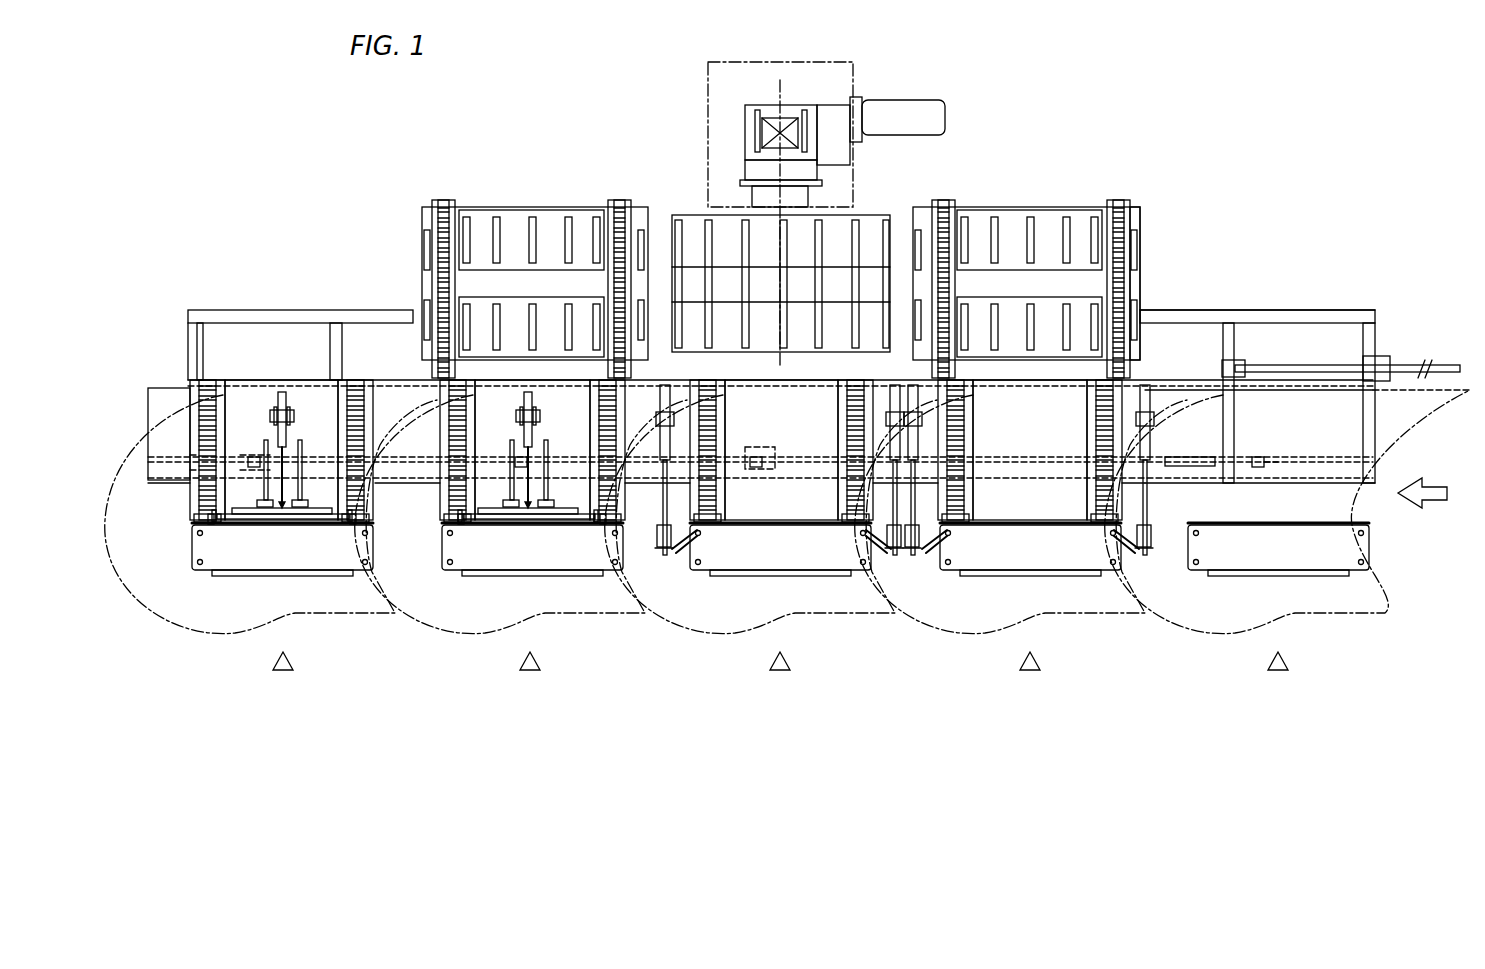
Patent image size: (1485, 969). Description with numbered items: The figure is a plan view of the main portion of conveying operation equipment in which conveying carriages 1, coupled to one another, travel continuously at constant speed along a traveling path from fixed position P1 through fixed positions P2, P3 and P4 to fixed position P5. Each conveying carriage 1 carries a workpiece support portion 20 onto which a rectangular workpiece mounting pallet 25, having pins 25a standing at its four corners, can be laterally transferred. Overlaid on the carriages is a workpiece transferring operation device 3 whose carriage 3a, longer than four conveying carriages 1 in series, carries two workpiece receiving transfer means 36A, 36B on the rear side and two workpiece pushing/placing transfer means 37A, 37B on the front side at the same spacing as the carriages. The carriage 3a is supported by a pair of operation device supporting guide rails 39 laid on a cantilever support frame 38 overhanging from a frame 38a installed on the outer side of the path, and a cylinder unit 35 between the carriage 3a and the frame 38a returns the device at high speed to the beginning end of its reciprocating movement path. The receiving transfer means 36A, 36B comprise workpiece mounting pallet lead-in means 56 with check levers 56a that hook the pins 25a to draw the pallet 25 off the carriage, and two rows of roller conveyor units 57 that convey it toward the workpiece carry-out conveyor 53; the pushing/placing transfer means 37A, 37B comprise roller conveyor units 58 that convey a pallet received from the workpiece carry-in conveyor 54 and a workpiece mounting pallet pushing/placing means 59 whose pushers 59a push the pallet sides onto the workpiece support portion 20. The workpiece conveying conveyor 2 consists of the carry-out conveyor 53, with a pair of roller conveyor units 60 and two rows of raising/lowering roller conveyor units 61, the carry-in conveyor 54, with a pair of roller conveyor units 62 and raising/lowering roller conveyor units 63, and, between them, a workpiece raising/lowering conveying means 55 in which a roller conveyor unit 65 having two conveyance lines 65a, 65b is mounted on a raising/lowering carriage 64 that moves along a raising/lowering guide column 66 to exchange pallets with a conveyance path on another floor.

The conveying carriage 1 is at (787, 562).
The workpiece conveying conveyor 2 is at (1155, 243).
The workpiece transferring operation device 3 is at (405, 380).
The carriage 3a is at (168, 470).
The workpiece support portion 20 is at (307, 577).
The workpiece mounting pallet 25 is at (265, 562).
The pins 25a is at (700, 534).
The cylinder unit 35 is at (1268, 370).
The workpiece receiving transfer means 36A is at (775, 430).
The workpiece receiving transfer means 36B is at (1000, 430).
The workpiece pushing/placing transfer means 37A is at (312, 395).
The workpiece pushing/placing transfer means 37B is at (497, 525).
The cantilever support frame 38 is at (1376, 465).
The frame 38a is at (1330, 310).
The operation device supporting guide rails 39 is at (1300, 392).
The workpiece carry-out conveyor 53 is at (1056, 246).
The workpiece carry-in conveyor 54 is at (508, 246).
The workpiece raising/lowering conveying means 55 is at (772, 193).
The workpiece mounting pallet lead-in means 56 is at (665, 565).
The check levers 56a is at (700, 545).
The roller conveyor units 57 is at (728, 412).
The roller conveyor units 58 is at (358, 405).
The workpiece mounting pallet pushing/placing means 59 is at (318, 498).
The pushers 59a is at (232, 525).
The roller conveyor units 60 is at (947, 242).
The raising/lowering roller conveyor units 61 is at (1078, 243).
The roller conveyor units 62 is at (445, 213).
The raising/lowering roller conveyor units 63 is at (466, 322).
The raising/lowering carriage 64 is at (788, 243).
The roller conveyor unit 65 is at (728, 225).
The conveyance line 65a is at (798, 257).
The conveyance line 65b is at (720, 334).
The raising/lowering guide column 66 is at (770, 118).
The fixed position P1 is at (1278, 677).
The fixed position P2 is at (1030, 677).
The fixed position P3 is at (780, 677).
The fixed position P4 is at (530, 677).
The fixed position P5 is at (283, 677).